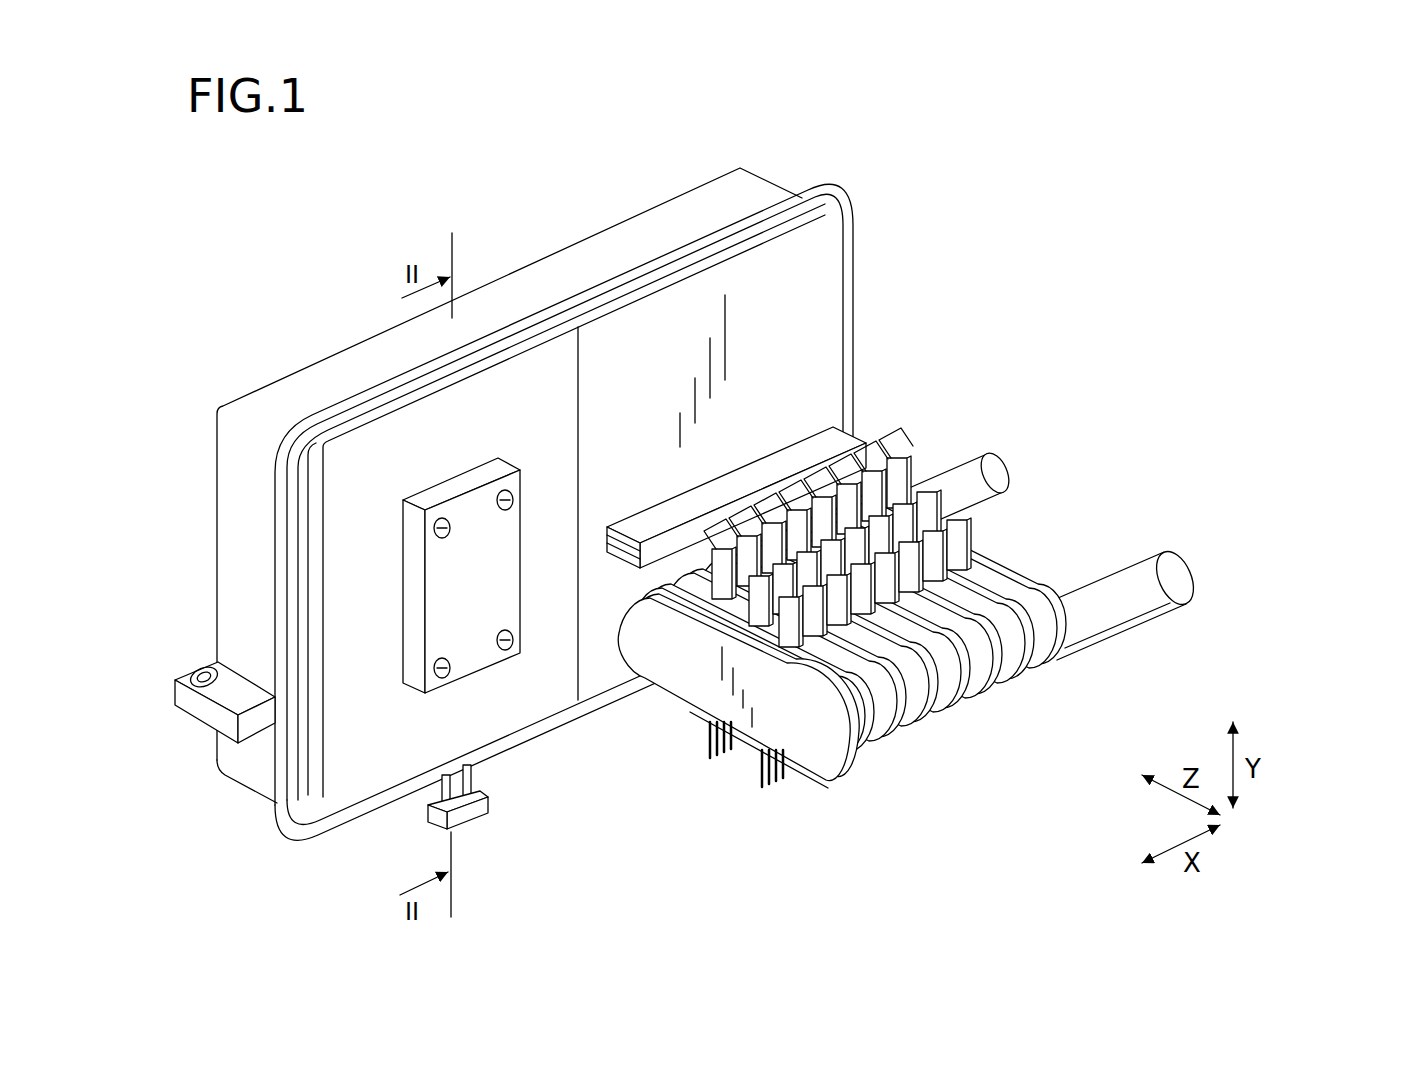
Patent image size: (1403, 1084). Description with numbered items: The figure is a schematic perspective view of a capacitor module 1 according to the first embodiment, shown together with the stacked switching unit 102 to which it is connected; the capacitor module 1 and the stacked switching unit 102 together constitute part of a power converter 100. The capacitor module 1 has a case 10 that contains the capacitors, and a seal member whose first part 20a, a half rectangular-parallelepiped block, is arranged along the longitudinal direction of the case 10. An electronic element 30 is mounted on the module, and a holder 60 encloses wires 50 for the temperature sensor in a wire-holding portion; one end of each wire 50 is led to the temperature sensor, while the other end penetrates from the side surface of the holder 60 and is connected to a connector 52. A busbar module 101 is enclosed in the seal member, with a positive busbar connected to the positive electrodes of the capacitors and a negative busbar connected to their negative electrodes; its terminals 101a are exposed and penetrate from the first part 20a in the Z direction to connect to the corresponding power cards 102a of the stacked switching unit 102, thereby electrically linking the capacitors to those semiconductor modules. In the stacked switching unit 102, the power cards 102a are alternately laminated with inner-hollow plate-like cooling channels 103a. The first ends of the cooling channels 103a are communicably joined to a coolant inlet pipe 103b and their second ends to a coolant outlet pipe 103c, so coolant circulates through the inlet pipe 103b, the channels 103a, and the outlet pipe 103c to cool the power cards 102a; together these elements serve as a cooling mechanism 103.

The capacitor module 1 is at (790, 181).
The case 10 is at (630, 236).
The first part 20a is at (820, 309).
The electronic element 30 is at (470, 653).
The wires 50 is at (423, 793).
The connector 52 is at (473, 812).
The holder 60 is at (545, 698).
The power converter 100 is at (971, 530).
The busbar module 101 is at (818, 435).
The terminals 101a is at (918, 452).
The stacked switching unit 102 is at (945, 748).
The power cards 102a is at (785, 680).
The cooling mechanism 103 is at (1118, 515).
The cooling channels 103a is at (1163, 555).
The coolant inlet pipe 103b is at (1005, 470).
The coolant outlet pipe 103c is at (1222, 554).